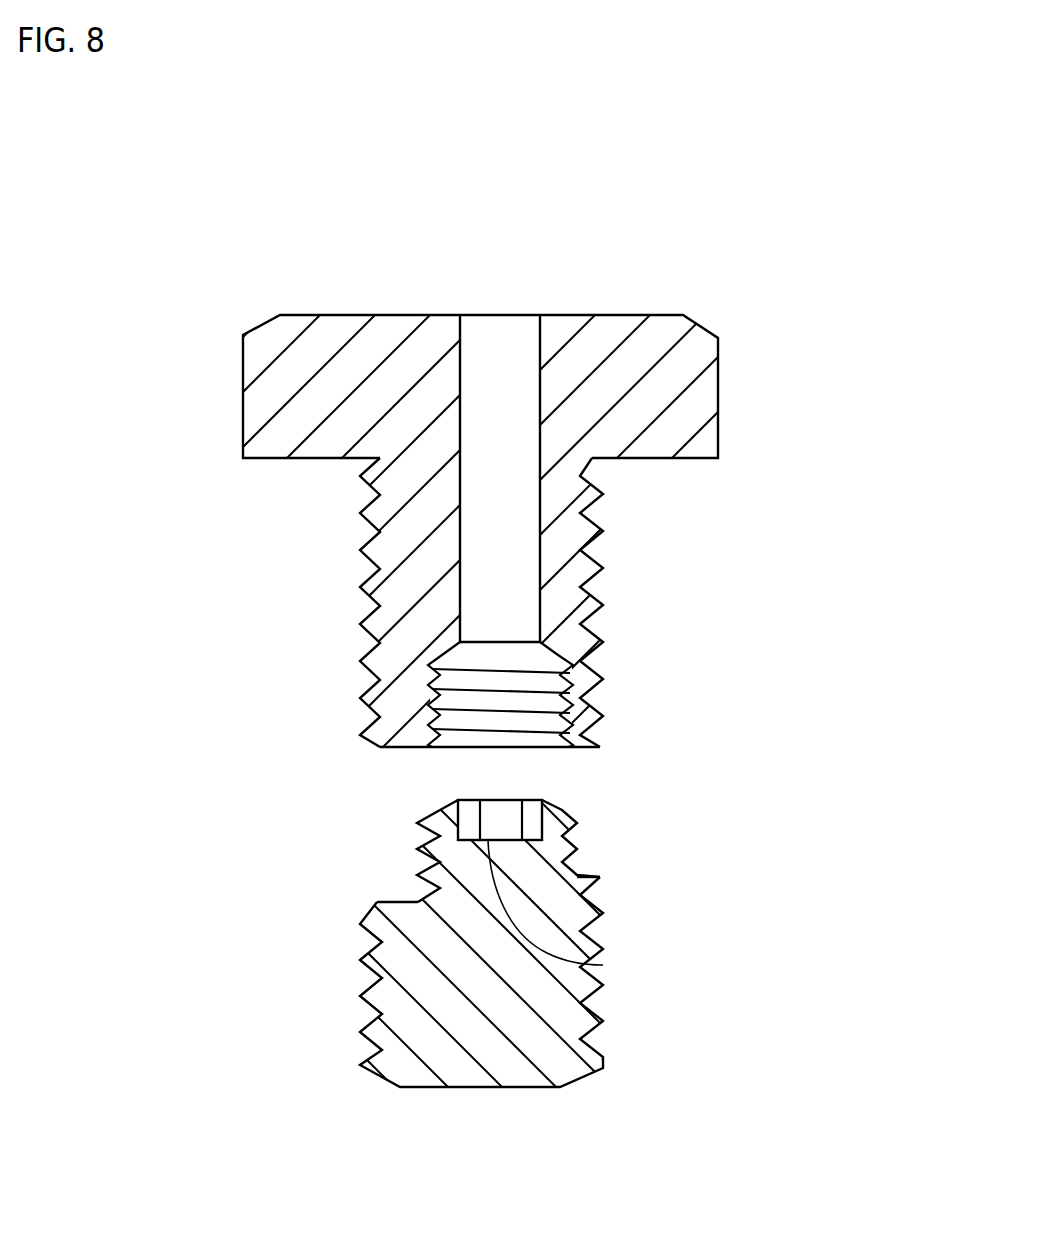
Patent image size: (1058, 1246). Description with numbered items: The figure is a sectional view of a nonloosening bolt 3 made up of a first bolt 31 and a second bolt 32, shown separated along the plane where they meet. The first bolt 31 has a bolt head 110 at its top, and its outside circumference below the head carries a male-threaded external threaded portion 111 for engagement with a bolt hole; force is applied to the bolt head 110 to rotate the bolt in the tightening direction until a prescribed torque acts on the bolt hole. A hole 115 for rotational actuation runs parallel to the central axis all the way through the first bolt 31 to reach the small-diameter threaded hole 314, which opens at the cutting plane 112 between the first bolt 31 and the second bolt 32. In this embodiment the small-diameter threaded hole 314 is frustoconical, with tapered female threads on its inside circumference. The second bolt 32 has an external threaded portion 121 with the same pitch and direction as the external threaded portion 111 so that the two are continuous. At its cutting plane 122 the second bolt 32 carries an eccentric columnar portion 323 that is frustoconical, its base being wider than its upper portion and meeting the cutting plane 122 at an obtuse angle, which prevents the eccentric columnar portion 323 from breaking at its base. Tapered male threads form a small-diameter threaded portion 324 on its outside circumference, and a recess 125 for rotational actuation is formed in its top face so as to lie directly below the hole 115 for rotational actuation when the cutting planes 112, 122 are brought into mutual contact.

The nonloosening bolt 3 is at (370, 270).
The first bolt 31 is at (210, 312).
The hole for rotational actuation 115 is at (708, 232).
The bolt head 110 is at (242, 407).
The external threaded portion 111 is at (360, 657).
The cutting plane 112 is at (412, 752).
The small-diameter threaded hole 314 is at (468, 742).
The eccentric columnar portion 323 is at (520, 798).
The small-diameter threaded portion 324 is at (574, 876).
The cutting plane 122 is at (393, 900).
The second bolt 32 is at (317, 998).
The external threaded portion 121 is at (363, 1023).
The recess for rotational actuation 125 is at (603, 966).